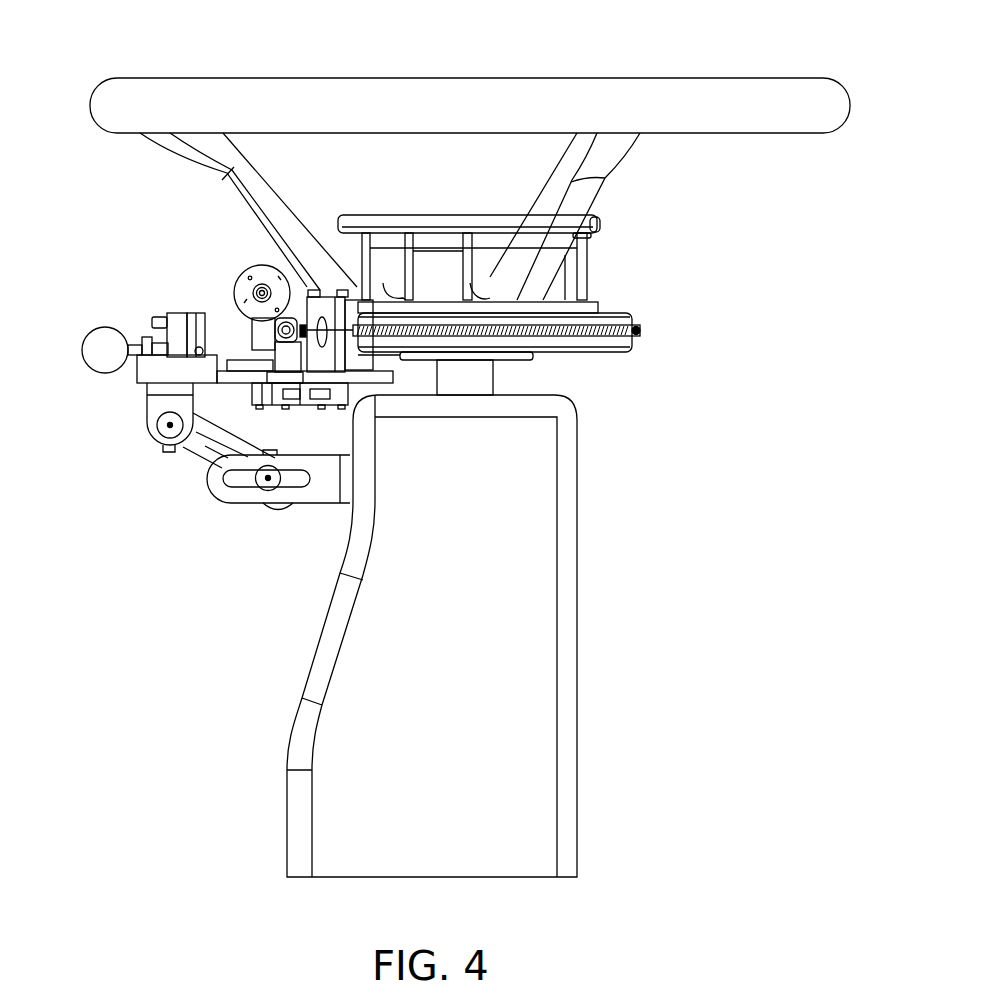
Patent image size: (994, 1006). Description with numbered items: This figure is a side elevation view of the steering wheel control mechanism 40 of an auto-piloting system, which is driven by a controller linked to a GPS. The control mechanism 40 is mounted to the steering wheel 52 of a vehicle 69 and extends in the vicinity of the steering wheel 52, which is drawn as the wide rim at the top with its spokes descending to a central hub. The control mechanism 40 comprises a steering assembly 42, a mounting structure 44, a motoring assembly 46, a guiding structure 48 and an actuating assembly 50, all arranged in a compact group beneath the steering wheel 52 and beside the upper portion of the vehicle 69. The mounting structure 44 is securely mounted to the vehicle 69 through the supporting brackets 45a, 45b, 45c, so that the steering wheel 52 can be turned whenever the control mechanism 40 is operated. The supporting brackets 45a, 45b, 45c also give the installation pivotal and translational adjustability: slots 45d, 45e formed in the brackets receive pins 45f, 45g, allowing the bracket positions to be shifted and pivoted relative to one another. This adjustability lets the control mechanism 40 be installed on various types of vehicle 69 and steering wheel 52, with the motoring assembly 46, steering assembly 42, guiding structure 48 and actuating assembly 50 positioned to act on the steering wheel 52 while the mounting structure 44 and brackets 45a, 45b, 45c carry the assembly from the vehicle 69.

The steering wheel 52 is at (611, 78).
The steering assembly 42 is at (615, 302).
The guiding structure 48 is at (386, 359).
The motoring assembly 46 is at (243, 263).
The steering wheel control mechanism 40 is at (177, 303).
The actuating assembly 50 is at (93, 379).
The mounting structure 44 is at (236, 389).
The supporting bracket 45a is at (157, 440).
The pin 45f is at (163, 431).
The supporting bracket 45b is at (198, 461).
The slot 45d is at (213, 450).
The supporting bracket 45c is at (238, 504).
The slot 45e is at (262, 489).
The pin 45g is at (284, 491).
The vehicle 69 is at (580, 602).